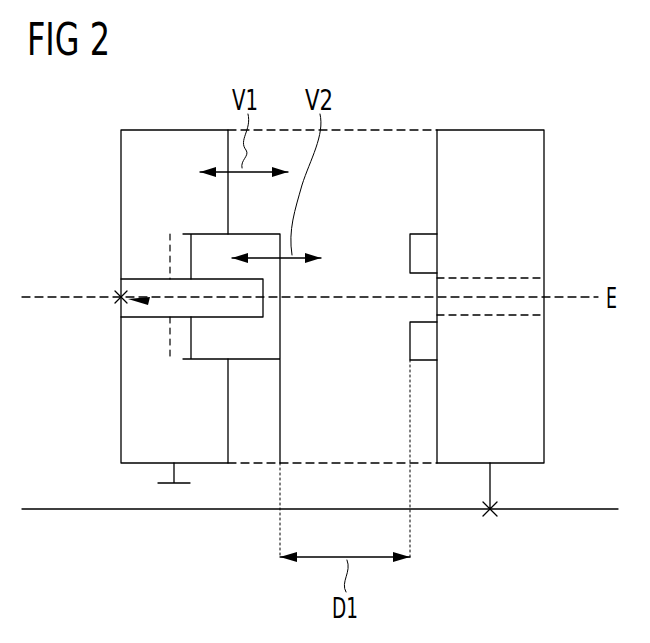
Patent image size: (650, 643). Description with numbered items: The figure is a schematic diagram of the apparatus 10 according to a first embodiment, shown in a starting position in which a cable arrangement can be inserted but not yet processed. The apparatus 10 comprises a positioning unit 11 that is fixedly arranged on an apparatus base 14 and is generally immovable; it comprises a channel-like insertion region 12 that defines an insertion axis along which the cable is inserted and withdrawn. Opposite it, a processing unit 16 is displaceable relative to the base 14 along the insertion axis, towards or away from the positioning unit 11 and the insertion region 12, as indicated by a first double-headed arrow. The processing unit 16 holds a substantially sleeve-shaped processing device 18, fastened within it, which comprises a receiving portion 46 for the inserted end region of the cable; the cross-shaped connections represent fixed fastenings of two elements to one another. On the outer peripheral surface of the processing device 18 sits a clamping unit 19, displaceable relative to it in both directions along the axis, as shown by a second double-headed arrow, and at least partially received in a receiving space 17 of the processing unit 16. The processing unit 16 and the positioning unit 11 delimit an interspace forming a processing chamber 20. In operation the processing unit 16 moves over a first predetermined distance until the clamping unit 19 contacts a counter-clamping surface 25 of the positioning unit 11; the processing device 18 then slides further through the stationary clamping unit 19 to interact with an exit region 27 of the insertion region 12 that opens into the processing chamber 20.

The apparatus 10 is at (472, 107).
The positioning unit 11 is at (520, 170).
The insertion region 12 is at (553, 287).
The apparatus base 14 is at (553, 512).
The processing unit 16 is at (151, 187).
The receiving space 17 is at (177, 346).
The processing device 18 is at (161, 318).
The clamping unit 19 is at (198, 252).
The processing chamber 20 is at (366, 136).
The counter-clamping surface 25 is at (423, 248).
The exit region 27 is at (398, 287).
The receiving portion 46 is at (121, 305).